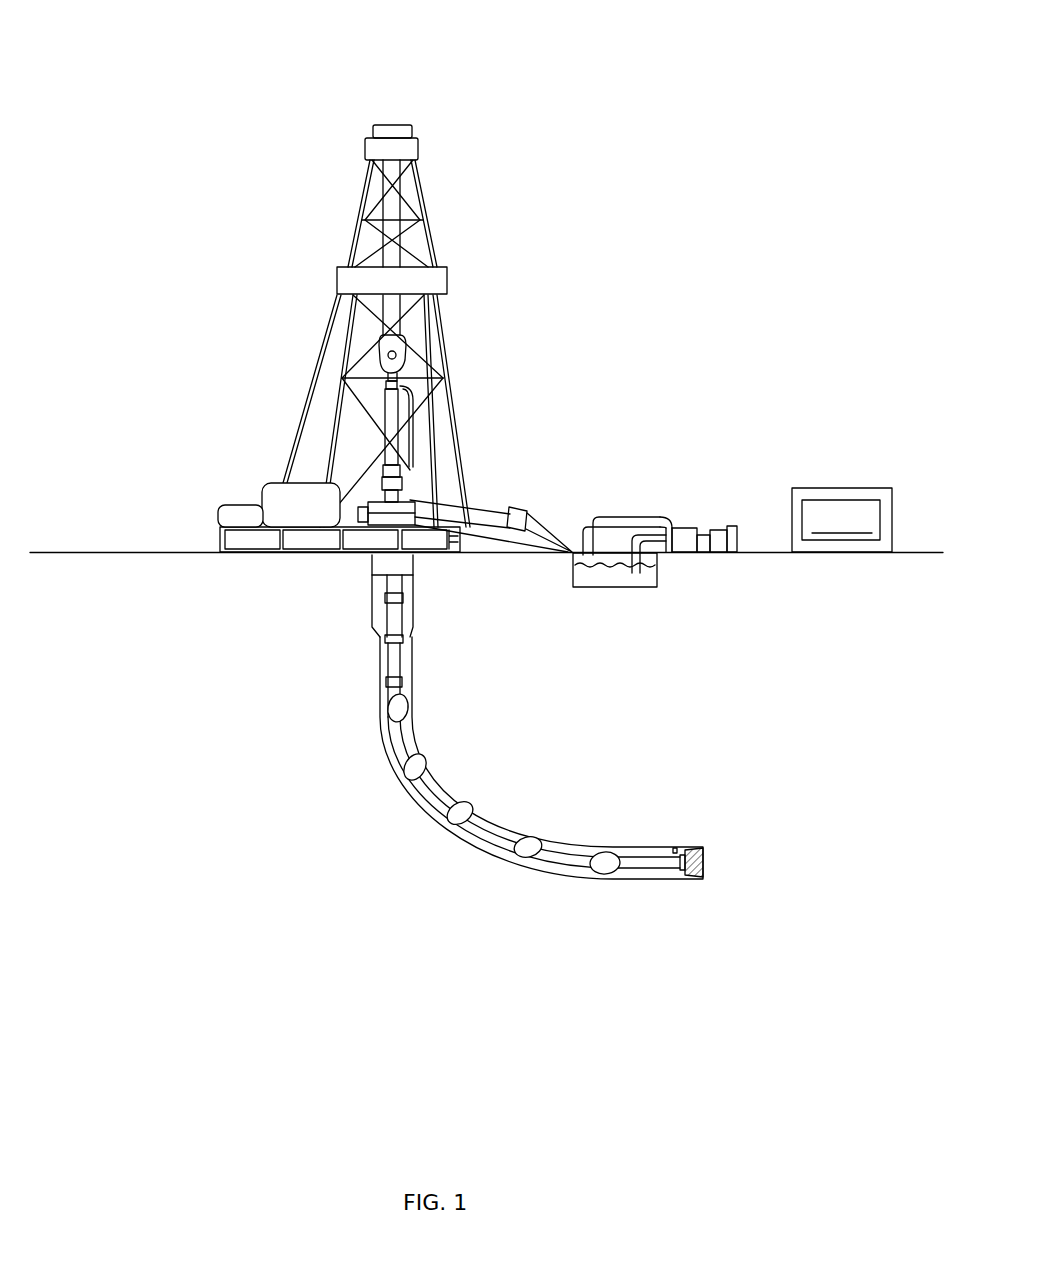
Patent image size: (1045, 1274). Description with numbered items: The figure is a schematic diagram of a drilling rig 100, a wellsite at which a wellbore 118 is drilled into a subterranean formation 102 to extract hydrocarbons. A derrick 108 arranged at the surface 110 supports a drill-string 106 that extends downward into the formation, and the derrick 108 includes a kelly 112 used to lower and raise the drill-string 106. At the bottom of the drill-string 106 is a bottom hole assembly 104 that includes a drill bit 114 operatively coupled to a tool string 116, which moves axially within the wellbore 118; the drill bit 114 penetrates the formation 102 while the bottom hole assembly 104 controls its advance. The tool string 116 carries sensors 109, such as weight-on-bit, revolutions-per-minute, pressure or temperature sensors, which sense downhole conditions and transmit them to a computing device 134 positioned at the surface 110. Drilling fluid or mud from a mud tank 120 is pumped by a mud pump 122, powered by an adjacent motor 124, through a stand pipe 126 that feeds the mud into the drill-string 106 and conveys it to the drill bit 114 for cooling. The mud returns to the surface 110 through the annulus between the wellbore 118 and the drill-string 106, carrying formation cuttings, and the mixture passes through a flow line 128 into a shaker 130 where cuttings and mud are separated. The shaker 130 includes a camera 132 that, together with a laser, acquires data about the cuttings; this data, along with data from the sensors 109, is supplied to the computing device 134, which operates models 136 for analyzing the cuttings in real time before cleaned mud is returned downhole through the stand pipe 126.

The drilling rig 100 is at (278, 74).
The subterranean formation 102 is at (224, 613).
The bottom hole assembly 104 is at (617, 845).
The drill-string 106 is at (393, 665).
The derrick 108 is at (338, 368).
The sensors 109 is at (393, 717).
The surface 110 is at (142, 552).
The kelly 112 is at (402, 355).
The drill bit 114 is at (705, 863).
The tool string 116 is at (675, 847).
The wellbore 118 is at (417, 800).
The mud tank 120 is at (617, 575).
The mud pump 122 is at (687, 530).
The motor 124 is at (733, 527).
The stand pipe 126 is at (428, 430).
The flow line 128 is at (475, 512).
The shaker 130 is at (522, 540).
The camera 132 is at (520, 510).
The computing device 134 is at (880, 477).
The models 136 is at (873, 512).